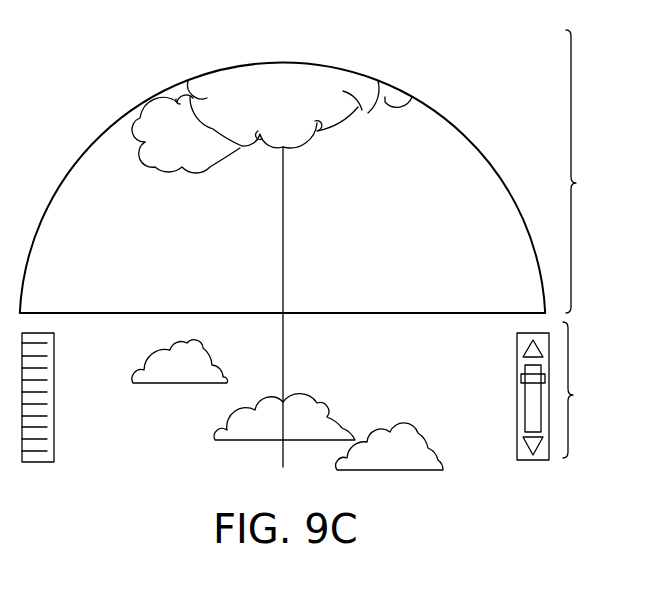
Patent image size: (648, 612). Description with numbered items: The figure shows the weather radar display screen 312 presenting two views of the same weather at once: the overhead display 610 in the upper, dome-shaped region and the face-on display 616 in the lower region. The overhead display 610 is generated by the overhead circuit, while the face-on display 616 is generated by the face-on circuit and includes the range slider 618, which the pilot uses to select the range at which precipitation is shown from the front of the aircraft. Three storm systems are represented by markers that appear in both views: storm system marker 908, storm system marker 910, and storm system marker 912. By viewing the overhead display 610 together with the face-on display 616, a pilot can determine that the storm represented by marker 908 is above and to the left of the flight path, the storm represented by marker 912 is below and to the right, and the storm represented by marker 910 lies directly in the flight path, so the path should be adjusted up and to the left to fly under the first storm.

The weather radar display screen 312 is at (116, 86).
The overhead display 610 is at (594, 171).
The face-on display 616 is at (592, 390).
The range slider 618 is at (522, 346).
The storm system marker 908 is at (198, 173).
The storm system marker 910 is at (284, 143).
The storm system marker 912 is at (366, 109).